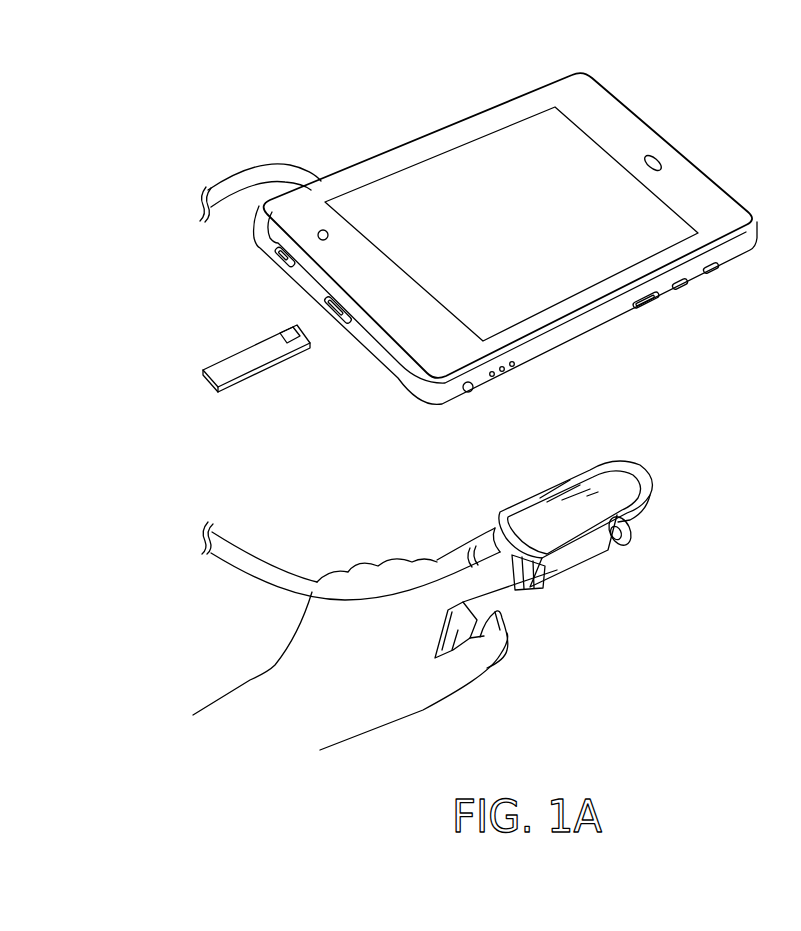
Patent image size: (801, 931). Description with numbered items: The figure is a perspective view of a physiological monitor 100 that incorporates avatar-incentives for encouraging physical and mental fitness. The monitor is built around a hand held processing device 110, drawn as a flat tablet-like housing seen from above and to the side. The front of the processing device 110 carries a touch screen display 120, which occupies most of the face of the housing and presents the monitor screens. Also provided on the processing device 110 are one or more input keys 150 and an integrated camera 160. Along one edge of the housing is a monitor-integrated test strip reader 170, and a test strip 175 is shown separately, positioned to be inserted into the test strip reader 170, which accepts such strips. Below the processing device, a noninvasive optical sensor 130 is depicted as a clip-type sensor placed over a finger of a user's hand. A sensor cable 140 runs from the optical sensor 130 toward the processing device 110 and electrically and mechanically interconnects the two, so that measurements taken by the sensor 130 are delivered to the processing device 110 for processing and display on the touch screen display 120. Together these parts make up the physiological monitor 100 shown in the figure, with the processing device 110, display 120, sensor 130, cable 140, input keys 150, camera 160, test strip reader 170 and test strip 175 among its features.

The physiological monitor 100 is at (385, 58).
The hand held processing device 110 is at (603, 82).
The touch screen display 120 is at (668, 224).
The noninvasive optical sensor 130 is at (625, 468).
The sensor cable 140 is at (233, 553).
The input key 150 is at (660, 158).
The integrated camera 160 is at (318, 238).
The monitor-integrated test strip reader 170 is at (347, 326).
The test strip 175 is at (223, 377).